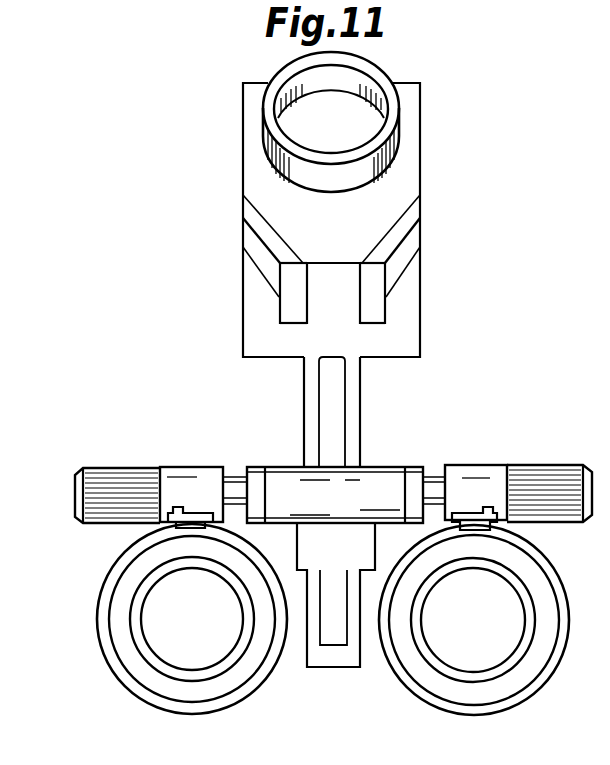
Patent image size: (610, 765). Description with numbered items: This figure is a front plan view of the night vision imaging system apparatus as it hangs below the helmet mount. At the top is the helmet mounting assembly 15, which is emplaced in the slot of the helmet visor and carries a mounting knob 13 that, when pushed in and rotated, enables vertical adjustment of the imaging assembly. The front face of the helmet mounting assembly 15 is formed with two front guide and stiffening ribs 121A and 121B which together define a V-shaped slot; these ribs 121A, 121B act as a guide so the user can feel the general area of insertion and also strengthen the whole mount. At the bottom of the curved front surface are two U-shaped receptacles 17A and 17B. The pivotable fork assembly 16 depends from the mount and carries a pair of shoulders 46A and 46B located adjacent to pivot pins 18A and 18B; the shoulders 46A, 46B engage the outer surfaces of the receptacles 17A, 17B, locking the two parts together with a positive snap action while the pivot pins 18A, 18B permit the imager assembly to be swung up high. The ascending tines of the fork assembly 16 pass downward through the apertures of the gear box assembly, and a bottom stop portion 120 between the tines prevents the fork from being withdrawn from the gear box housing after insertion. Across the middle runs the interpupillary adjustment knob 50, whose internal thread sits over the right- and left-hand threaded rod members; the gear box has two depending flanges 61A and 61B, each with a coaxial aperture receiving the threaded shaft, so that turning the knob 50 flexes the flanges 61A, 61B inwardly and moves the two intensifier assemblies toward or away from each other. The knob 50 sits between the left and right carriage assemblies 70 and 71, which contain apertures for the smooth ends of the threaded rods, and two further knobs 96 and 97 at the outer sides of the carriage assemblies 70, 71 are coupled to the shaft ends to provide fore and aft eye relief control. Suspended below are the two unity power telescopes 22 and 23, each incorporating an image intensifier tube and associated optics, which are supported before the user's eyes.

The mounting knob 13 is at (342, 80).
The helmet mounting assembly 15 is at (410, 121).
The front guide and stiffening rib 121A is at (396, 220).
The front guide and stiffening rib 121B is at (258, 223).
The U-shaped receptacle 17A is at (373, 291).
The U-shaped receptacle 17B is at (290, 310).
The pivot pin 18A is at (387, 298).
The pivot pin 18B is at (283, 297).
The shoulder 46A is at (293, 340).
The shoulder 46B is at (375, 343).
The fork assembly 16 is at (362, 398).
The bottom stop portion 120 is at (320, 657).
The interpupillary adjustment knob 50 is at (374, 472).
The depending flange 61A is at (262, 470).
The depending flange 61B is at (420, 468).
The left carriage assembly 70 is at (178, 473).
The right carriage assembly 71 is at (488, 466).
The eye relief knob 96 is at (103, 467).
The eye relief knob 97 is at (553, 466).
The unity power telescope 22 is at (118, 556).
The unity power telescope 23 is at (568, 598).